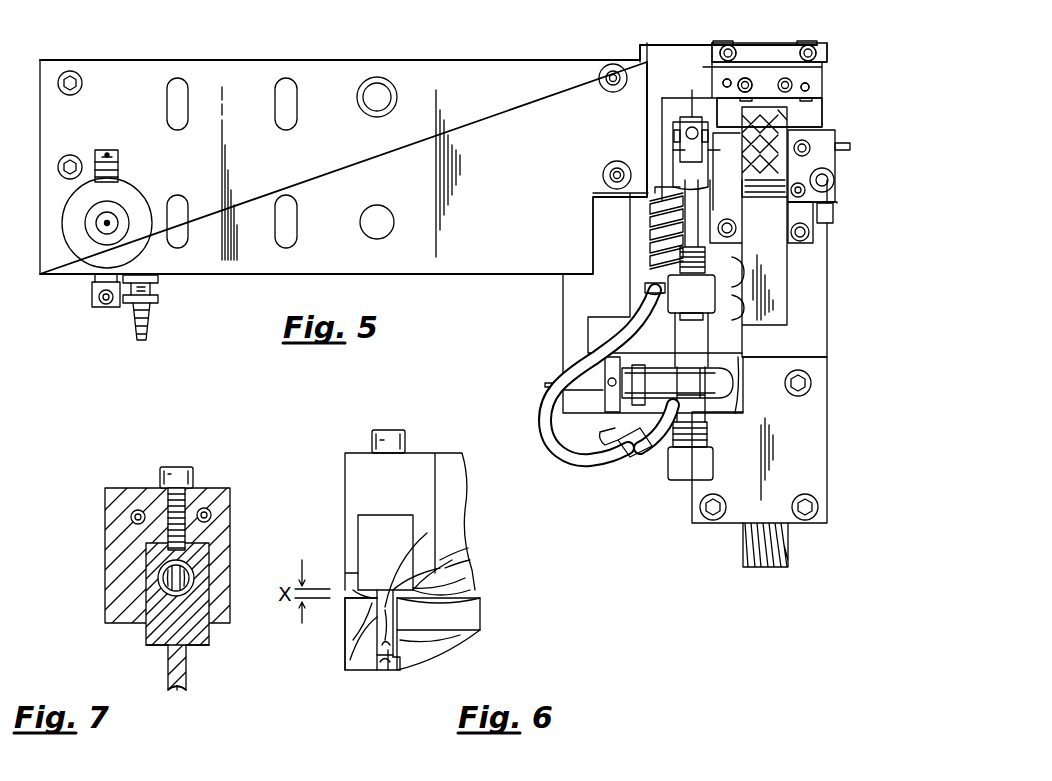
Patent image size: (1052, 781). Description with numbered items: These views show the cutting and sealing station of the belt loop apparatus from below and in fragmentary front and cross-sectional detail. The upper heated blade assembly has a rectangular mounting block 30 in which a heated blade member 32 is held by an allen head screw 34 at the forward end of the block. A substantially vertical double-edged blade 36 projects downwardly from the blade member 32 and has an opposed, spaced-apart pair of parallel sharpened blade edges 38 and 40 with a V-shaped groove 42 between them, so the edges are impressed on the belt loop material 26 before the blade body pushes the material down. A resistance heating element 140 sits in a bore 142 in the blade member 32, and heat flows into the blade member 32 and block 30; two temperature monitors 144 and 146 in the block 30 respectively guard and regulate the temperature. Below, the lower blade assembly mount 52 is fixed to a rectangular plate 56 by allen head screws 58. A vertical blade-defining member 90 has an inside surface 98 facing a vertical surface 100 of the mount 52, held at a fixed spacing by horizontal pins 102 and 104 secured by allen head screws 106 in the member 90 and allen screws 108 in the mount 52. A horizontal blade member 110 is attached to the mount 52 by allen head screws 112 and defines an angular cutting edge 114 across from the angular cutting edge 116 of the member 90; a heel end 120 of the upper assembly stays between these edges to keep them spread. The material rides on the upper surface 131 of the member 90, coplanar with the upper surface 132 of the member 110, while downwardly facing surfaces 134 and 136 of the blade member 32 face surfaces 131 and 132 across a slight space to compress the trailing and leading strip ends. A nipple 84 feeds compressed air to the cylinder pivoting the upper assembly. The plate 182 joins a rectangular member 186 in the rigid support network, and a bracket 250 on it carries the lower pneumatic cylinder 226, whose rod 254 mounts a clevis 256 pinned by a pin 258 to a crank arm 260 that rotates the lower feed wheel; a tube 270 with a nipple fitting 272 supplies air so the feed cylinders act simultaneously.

In FIG. 5, the belt loop material 26 is at (786, 547).
In FIG. 6, the mounting block 30 is at (345, 452).
In FIG. 7, the mounting block 30 is at (102, 567).
In FIG. 6, the heated blade member 32 is at (356, 520).
In FIG. 7, the heated blade member 32 is at (144, 634).
In FIG. 6, the allen head screw 34 is at (398, 426).
In FIG. 7, the allen head screw 34 is at (191, 470).
In FIG. 6, the double-edged blade 36 is at (457, 543).
In FIG. 7, the double-edged blade 36 is at (167, 668).
In FIG. 6, the blade edge 38 is at (385, 672).
In FIG. 7, the blade edge 38 is at (180, 688).
In FIG. 6, the blade edge 40 is at (397, 668).
In FIG. 7, the blade edge 40 is at (187, 688).
In FIG. 7, the V-shaped groove 42 is at (180, 694).
In FIG. 5, the lower blade assembly mount 52 is at (829, 82).
In FIG. 6, the lower blade assembly mount 52 is at (472, 636).
In FIG. 5, the rectangular plate 56 is at (474, 58).
In FIG. 5, the allen head screws 58 is at (603, 176).
In FIG. 5, the nipple 84 is at (148, 329).
In FIG. 5, the blade-defining member 90 is at (828, 44).
In FIG. 6, the blade-defining member 90 is at (344, 650).
In FIG. 6, the inside surface 98 is at (377, 660).
In FIG. 6, the vertical surface 100 is at (395, 660).
In FIG. 5, the horizontal pin 102 is at (721, 41).
In FIG. 5, the horizontal pin 104 is at (812, 42).
In FIG. 5, the allen head screws 106 is at (803, 57).
In FIG. 5, the allen screws 108 is at (808, 86).
In FIG. 5, the horizontal blade member 110 is at (824, 118).
In FIG. 6, the horizontal blade member 110 is at (443, 630).
In FIG. 5, the allen head screws 112 is at (752, 88).
In FIG. 6, the angular cutting edge 114 is at (403, 663).
In FIG. 6, the angular cutting edge 116 is at (360, 635).
In FIG. 6, the heel end 120 is at (390, 650).
In FIG. 6, the upper planar surface 131 is at (353, 587).
In FIG. 6, the upper planar rectangular surface 132 is at (470, 595).
In FIG. 6, the downwardly facing planar surface 134 is at (372, 601).
In FIG. 7, the downwardly facing planar surface 134 is at (157, 648).
In FIG. 6, the downwardly facing planar surface 136 is at (468, 578).
In FIG. 7, the downwardly facing planar surface 136 is at (197, 648).
In FIG. 7, the resistance heating element 140 is at (196, 570).
In FIG. 7, the bore 142 is at (190, 580).
In FIG. 7, the temperature monitor 144 is at (131, 515).
In FIG. 7, the temperature monitor 146 is at (211, 514).
In FIG. 5, the plate 182 is at (829, 431).
In FIG. 5, the rectangular member 186 is at (805, 357).
In FIG. 5, the lower pneumatic cylinder 226 is at (712, 340).
In FIG. 5, the bracket 250 is at (668, 462).
In FIG. 5, the rod 254 is at (652, 222).
In FIG. 5, the clevis 256 is at (675, 160).
In FIG. 5, the pin 258 is at (678, 133).
In FIG. 5, the crank arm 260 is at (688, 120).
In FIG. 5, the tube 270 is at (545, 405).
In FIG. 5, the nipple fitting 272 is at (628, 470).